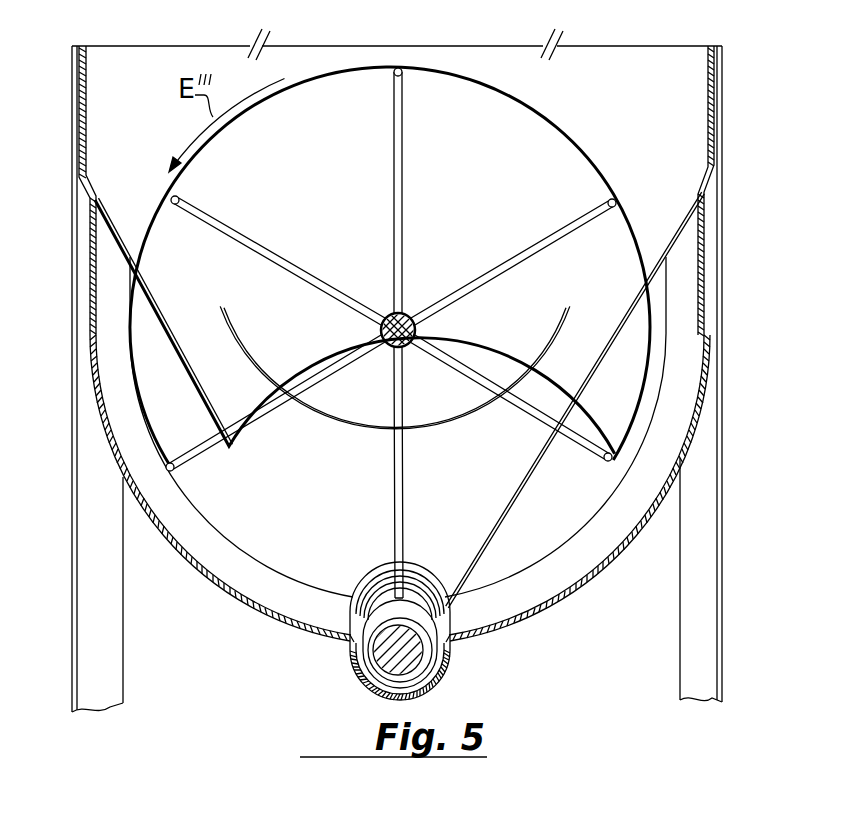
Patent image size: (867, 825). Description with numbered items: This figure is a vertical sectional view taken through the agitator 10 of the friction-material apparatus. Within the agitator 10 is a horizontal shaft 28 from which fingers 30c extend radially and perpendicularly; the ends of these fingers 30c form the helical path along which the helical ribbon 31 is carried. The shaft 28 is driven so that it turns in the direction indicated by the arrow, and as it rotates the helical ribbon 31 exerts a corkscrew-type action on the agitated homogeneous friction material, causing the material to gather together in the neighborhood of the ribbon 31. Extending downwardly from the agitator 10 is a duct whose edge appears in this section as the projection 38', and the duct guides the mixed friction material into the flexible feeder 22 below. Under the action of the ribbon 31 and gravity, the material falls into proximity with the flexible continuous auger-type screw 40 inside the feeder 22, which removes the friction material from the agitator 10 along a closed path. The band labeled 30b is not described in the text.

The agitator 10 is at (722, 133).
The flexible feeder 22 is at (352, 636).
The horizontal shaft 28 is at (410, 318).
The band / belt 30b is at (407, 492).
The fingers 30c is at (393, 162).
The helical ribbon 31 is at (566, 125).
The projection of the edge of the duct 38' is at (432, 449).
The flexible screw 40 is at (405, 651).